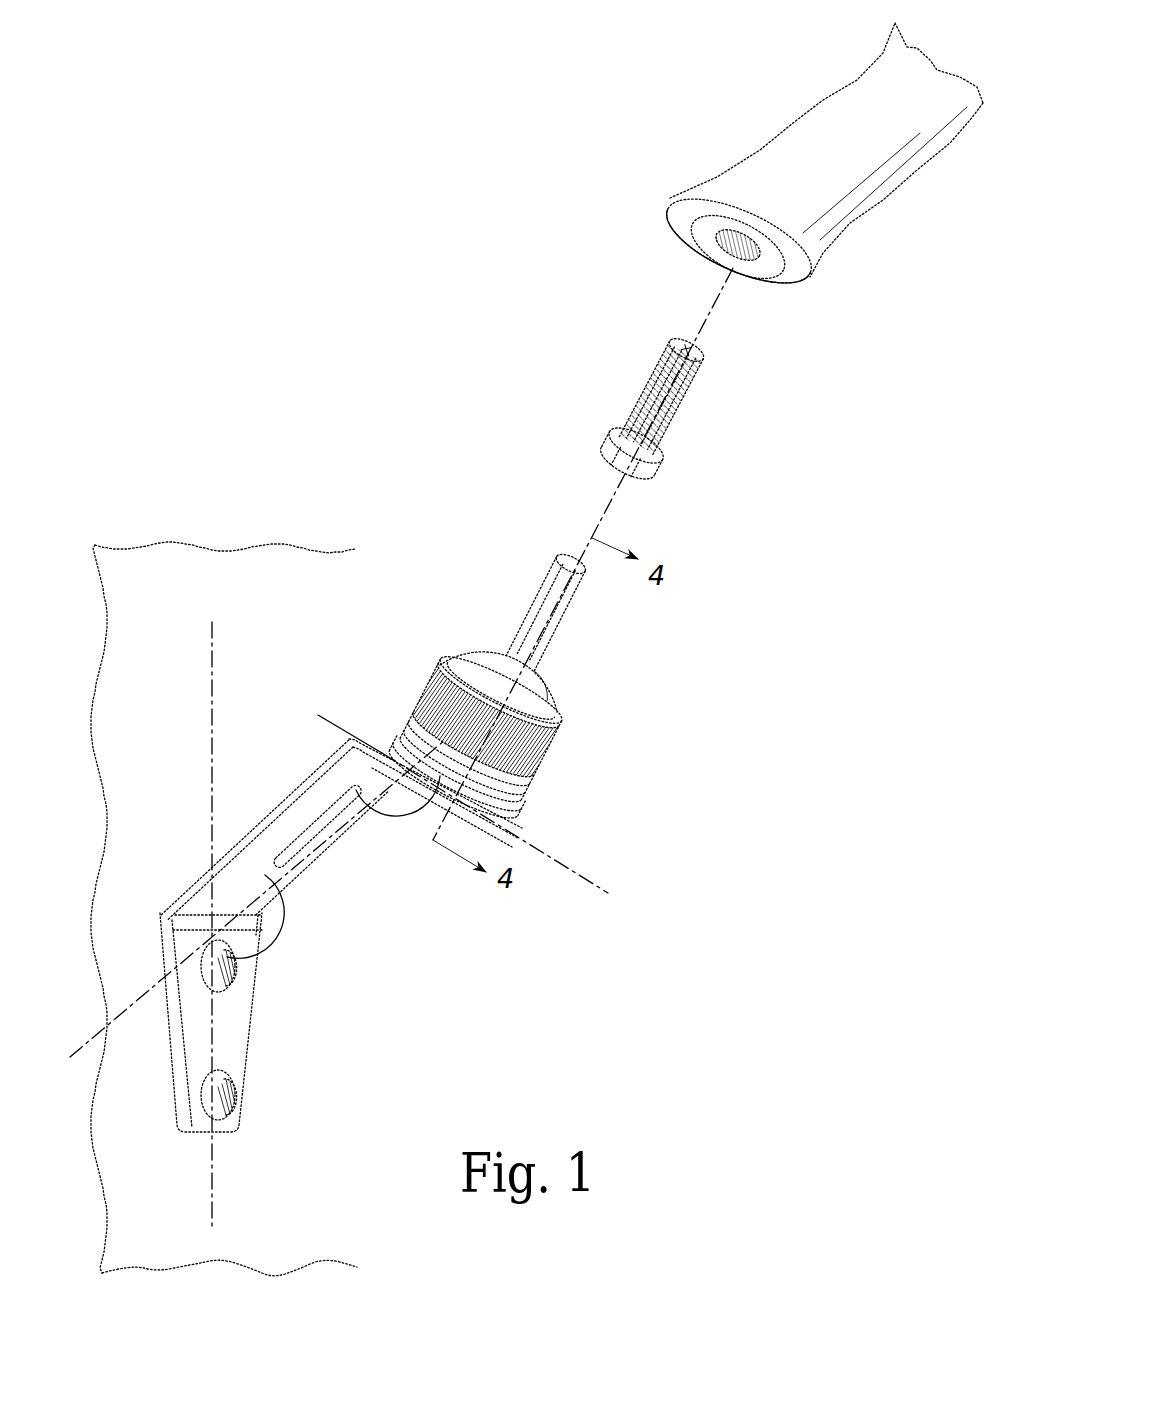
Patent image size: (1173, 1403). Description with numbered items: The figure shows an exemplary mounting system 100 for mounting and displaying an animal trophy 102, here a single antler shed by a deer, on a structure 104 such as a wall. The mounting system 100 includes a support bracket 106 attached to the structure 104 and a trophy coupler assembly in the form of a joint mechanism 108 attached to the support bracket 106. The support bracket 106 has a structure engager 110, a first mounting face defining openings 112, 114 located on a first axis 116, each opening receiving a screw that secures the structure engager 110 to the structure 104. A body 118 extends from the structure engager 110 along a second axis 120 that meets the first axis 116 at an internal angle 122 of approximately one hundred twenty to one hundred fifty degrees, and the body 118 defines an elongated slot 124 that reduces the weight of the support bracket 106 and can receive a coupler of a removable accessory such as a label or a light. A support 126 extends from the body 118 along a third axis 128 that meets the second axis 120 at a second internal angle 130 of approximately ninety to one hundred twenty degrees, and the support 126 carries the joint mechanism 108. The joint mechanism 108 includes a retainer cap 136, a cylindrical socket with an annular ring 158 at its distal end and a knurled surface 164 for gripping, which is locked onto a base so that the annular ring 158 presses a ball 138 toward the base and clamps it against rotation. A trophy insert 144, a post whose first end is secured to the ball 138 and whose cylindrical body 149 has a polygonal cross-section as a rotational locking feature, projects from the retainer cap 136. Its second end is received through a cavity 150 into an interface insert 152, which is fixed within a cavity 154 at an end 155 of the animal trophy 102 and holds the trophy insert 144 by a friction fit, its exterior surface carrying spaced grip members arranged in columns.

The mounting system 100 is at (322, 206).
The animal trophy 102 is at (750, 153).
The structure 104 is at (146, 562).
The support bracket 106 is at (302, 874).
The joint mechanism 108 is at (425, 586).
The structure engager 110 is at (238, 1046).
The opening 112 is at (236, 980).
The opening 114 is at (236, 1108).
The first axis 116 is at (214, 1193).
The body 118 is at (341, 838).
The second axis 120 is at (110, 1023).
The internal angle 122 is at (268, 935).
The elongated slot 124 is at (306, 837).
The support 126 is at (520, 823).
The third axis 128 is at (596, 897).
The second internal angle 130 is at (396, 820).
The retainer cap 136 is at (413, 742).
The ball 138 is at (538, 693).
The trophy insert 144 is at (566, 605).
The cylindrical body 149 is at (560, 580).
The cavity 150 is at (638, 482).
The interface insert 152 is at (648, 473).
The cavity 154 is at (745, 258).
The end 155 is at (798, 276).
The annular ring 158 is at (557, 713).
The knurled surface 164 is at (545, 757).